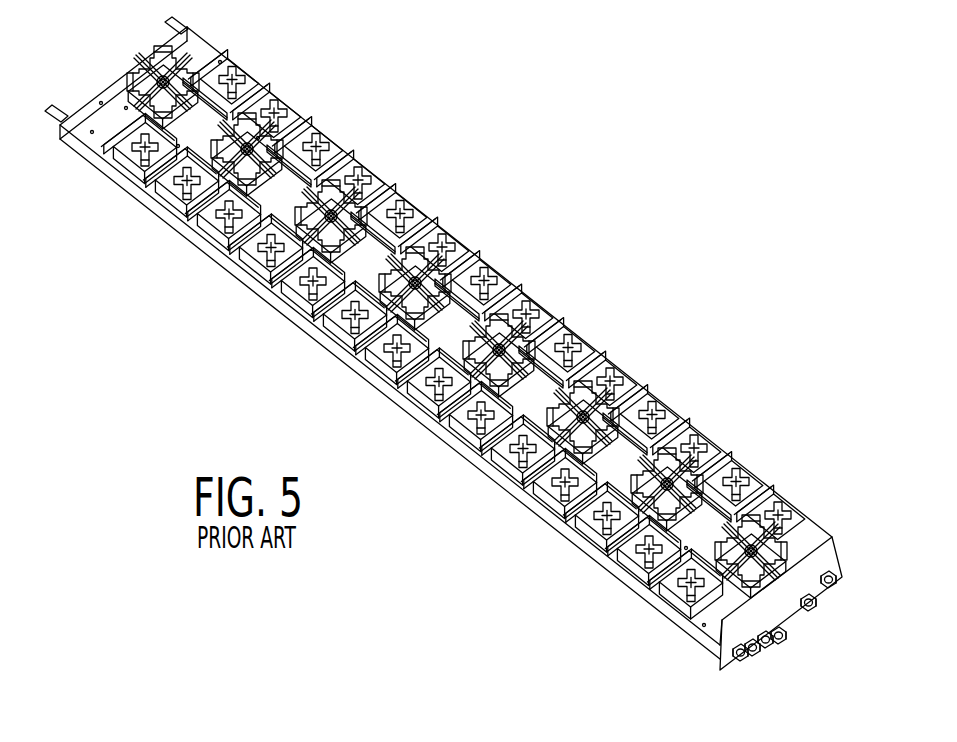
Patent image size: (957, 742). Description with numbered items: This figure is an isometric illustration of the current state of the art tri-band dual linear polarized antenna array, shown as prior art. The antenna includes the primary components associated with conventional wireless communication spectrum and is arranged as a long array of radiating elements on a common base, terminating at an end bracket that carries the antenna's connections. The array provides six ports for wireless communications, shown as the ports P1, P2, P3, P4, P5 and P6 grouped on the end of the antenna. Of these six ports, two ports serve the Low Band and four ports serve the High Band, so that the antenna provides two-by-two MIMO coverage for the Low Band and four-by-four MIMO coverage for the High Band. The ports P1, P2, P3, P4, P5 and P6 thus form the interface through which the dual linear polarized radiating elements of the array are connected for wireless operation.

The port P1 is at (735, 660).
The port P2 is at (752, 660).
The port P3 is at (768, 650).
The port P4 is at (785, 642).
The port P5 is at (812, 612).
The port P6 is at (835, 590).